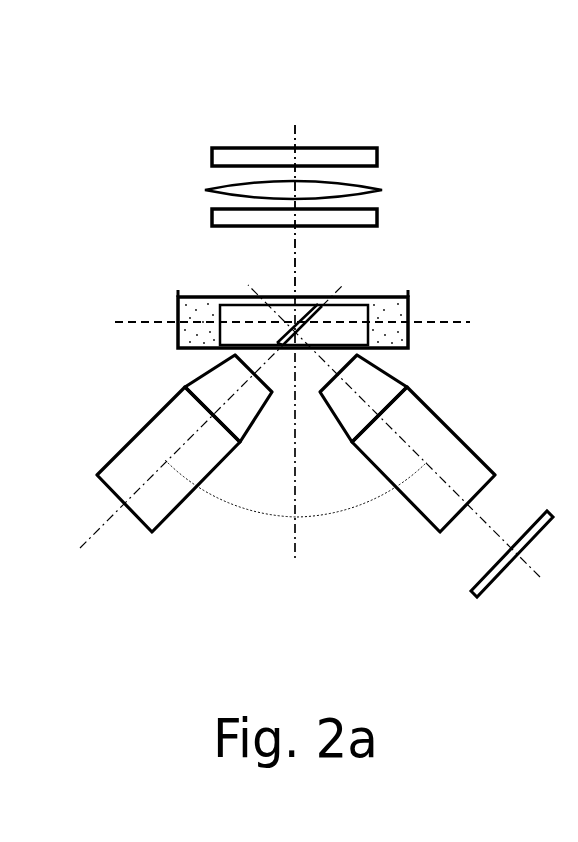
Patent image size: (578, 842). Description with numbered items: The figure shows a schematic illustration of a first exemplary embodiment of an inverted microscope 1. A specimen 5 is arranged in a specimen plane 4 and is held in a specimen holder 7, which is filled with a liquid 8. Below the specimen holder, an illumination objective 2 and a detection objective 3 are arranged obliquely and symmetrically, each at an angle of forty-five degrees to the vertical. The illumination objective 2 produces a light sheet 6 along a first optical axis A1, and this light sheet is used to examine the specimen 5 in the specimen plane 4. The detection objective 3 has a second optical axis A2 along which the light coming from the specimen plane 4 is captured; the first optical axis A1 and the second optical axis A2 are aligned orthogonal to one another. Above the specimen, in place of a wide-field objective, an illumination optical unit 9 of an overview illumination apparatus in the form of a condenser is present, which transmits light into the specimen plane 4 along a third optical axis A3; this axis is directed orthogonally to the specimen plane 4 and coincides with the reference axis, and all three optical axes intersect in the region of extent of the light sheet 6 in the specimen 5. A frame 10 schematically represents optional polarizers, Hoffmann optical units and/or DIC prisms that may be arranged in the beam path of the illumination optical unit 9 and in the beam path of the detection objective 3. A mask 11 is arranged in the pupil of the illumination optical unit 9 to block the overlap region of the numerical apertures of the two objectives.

The microscope 1 is at (161, 83).
The illumination objective 2 is at (178, 412).
The detection objective 3 is at (420, 415).
The specimen plane 4 is at (425, 322).
The specimen 5 is at (345, 320).
The light sheet 6 is at (283, 297).
The specimen holder 7 is at (178, 318).
The liquid 8 is at (180, 294).
The illumination optical unit 9 is at (382, 190).
The frame 10 is at (211, 212).
The mask 11 is at (211, 152).
The first optical axis A1 is at (98, 528).
The second optical axis A2 is at (488, 512).
The third optical axis A3 is at (297, 125).